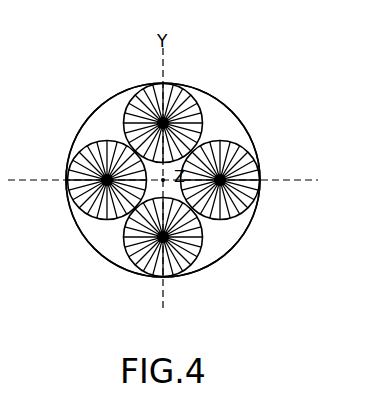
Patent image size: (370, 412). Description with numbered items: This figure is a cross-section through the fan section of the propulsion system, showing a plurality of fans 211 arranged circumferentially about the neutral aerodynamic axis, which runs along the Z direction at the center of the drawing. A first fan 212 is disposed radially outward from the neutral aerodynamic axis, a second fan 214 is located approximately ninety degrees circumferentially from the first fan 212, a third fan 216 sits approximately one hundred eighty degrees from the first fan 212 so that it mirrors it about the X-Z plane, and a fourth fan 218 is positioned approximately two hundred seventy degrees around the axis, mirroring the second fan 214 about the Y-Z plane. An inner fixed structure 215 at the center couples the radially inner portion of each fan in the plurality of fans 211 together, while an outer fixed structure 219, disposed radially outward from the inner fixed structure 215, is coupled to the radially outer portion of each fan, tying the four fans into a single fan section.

The plurality of fans 211 is at (177, 192).
The first fan 212 is at (147, 100).
The second fan 214 is at (243, 148).
The inner fixed structure 215 is at (153, 173).
The third fan 216 is at (147, 273).
The fourth fan 218 is at (67, 190).
The outer fixed structure 219 is at (89, 135).